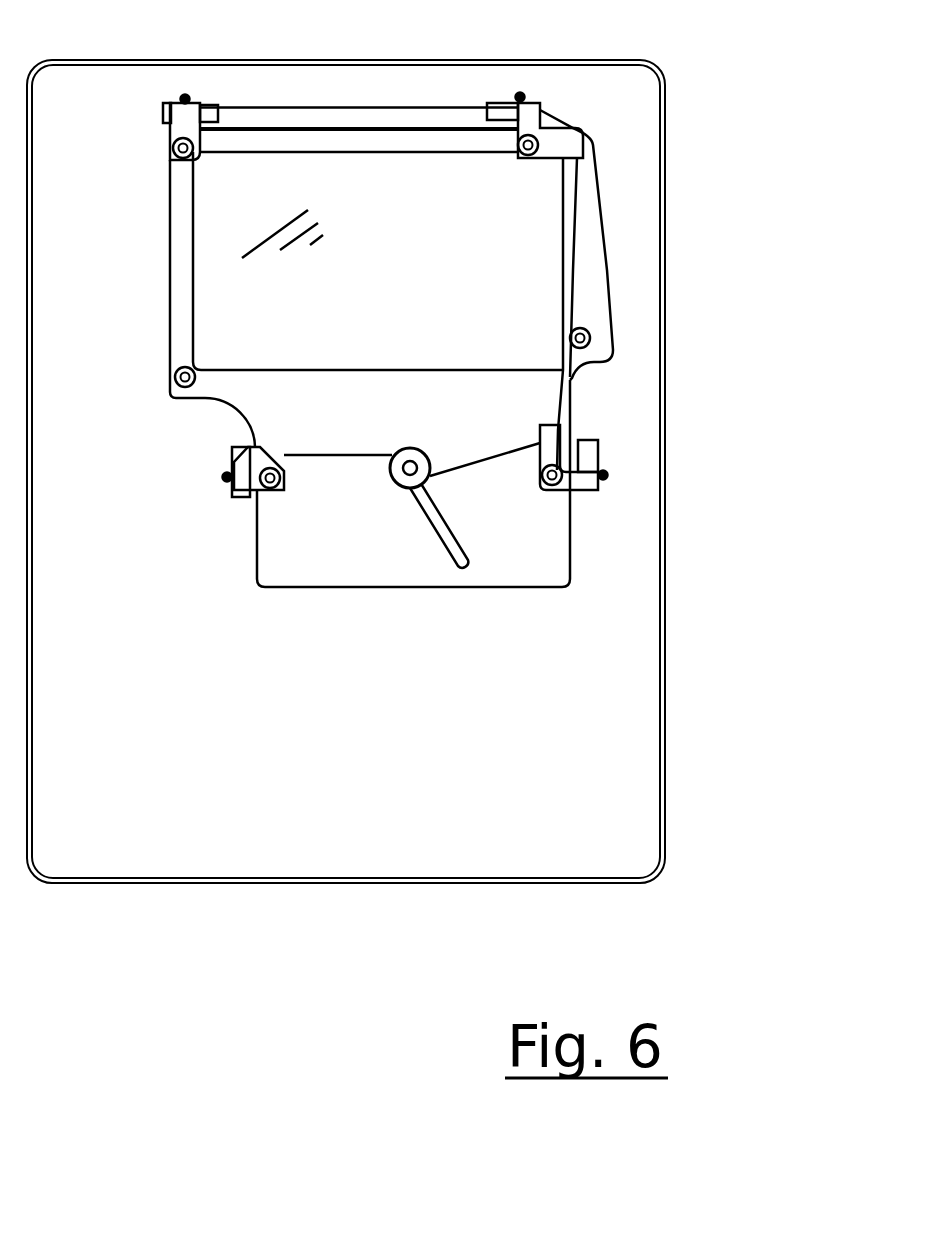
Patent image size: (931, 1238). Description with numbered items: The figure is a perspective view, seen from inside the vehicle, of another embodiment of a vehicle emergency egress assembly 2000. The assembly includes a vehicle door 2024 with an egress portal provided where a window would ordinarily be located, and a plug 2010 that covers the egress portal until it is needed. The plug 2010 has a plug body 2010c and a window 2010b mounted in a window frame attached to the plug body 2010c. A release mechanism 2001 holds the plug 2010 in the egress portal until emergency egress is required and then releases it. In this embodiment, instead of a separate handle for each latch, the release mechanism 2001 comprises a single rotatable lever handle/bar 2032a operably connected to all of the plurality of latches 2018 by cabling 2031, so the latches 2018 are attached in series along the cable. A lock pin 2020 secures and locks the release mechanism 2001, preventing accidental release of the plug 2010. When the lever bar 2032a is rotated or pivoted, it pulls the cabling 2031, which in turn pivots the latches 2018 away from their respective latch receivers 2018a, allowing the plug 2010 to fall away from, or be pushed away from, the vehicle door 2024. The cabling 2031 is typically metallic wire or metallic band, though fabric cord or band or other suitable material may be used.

The vehicle emergency egress assembly 2000 is at (193, 955).
The release mechanism 2001 is at (390, 518).
The plug 2010 is at (203, 425).
The window 2010b is at (455, 310).
The plug body 2010c is at (350, 425).
The latch 2018 is at (175, 122).
The latch receiver 2018a is at (587, 452).
The lock pin 2020 is at (403, 472).
The vehicle door 2024 is at (385, 753).
The cabling 2031 is at (302, 108).
The lever handle/bar 2032a is at (457, 548).